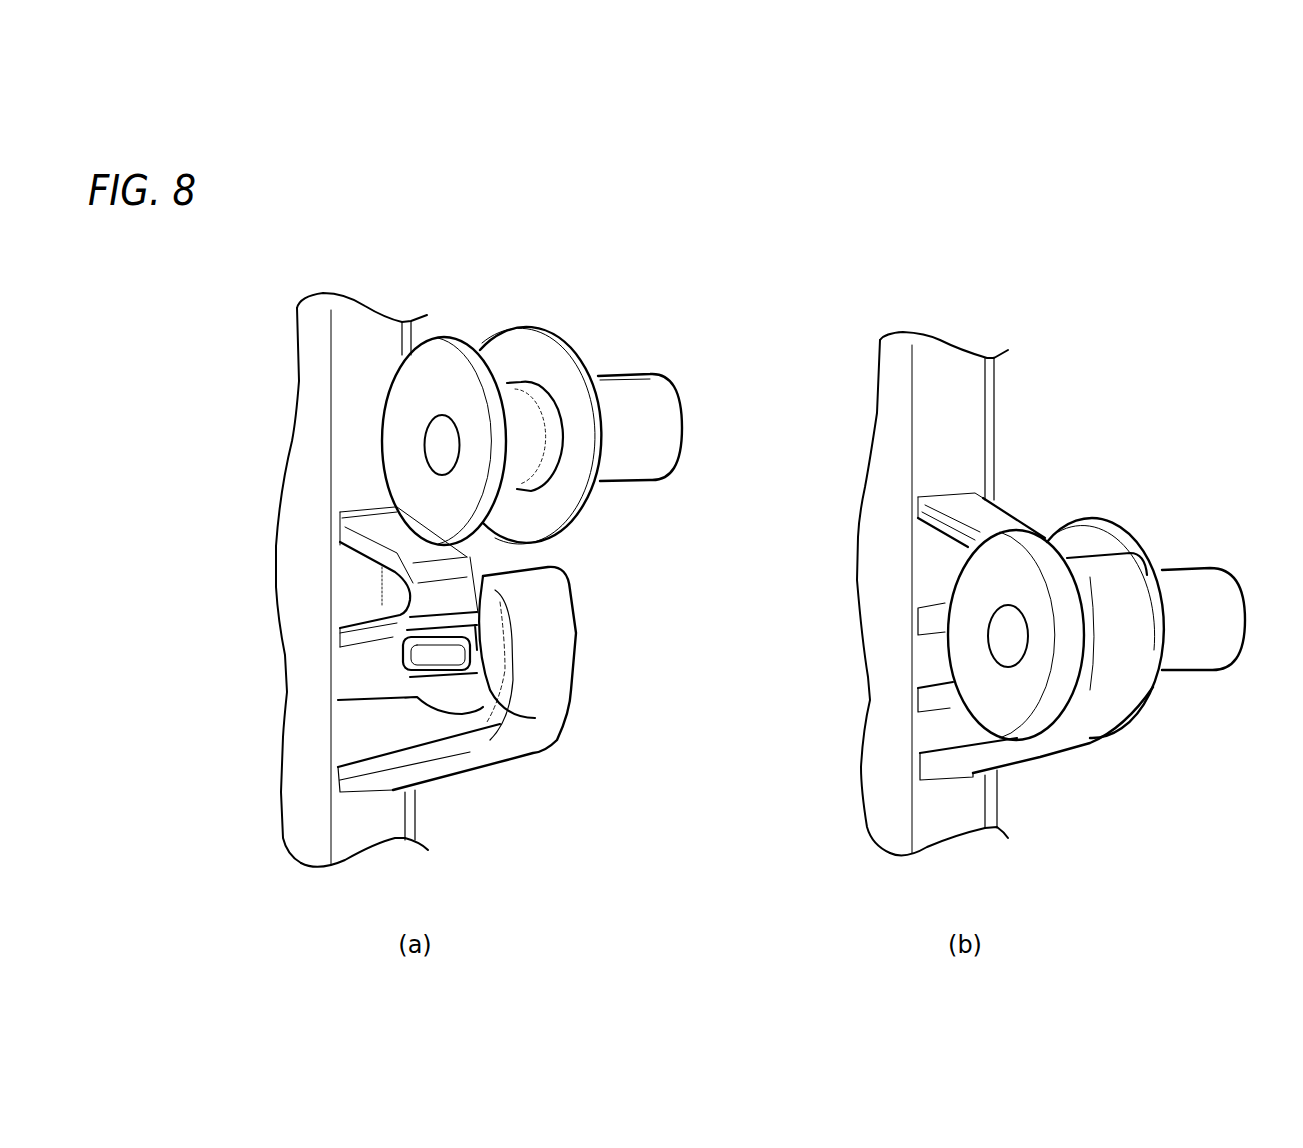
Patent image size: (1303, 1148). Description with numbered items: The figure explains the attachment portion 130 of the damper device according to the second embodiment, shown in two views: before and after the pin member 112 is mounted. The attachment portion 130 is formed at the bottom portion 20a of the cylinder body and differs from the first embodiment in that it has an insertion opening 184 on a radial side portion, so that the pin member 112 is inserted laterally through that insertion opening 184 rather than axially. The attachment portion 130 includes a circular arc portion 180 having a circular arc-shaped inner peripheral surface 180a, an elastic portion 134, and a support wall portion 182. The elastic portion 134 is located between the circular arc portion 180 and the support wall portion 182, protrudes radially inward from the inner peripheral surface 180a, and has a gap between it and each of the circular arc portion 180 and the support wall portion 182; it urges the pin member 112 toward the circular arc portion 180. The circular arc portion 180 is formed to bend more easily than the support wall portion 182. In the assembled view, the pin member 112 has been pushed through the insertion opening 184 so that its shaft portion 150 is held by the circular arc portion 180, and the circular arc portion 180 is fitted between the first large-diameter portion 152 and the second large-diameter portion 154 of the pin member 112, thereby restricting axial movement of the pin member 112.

The bottom portion 20a is at (368, 333).
The pin member 112 is at (680, 400).
The attachment portion 130 is at (507, 761).
The elastic portion 134 is at (405, 660).
The shaft portion 150 is at (520, 415).
The first large-diameter portion 152 is at (400, 390).
The second large-diameter portion 154 is at (550, 365).
The circular arc portion 180 is at (553, 628).
The inner peripheral surface 180a is at (440, 697).
The support wall portion 182 is at (410, 597).
The insertion opening 184 is at (478, 572).